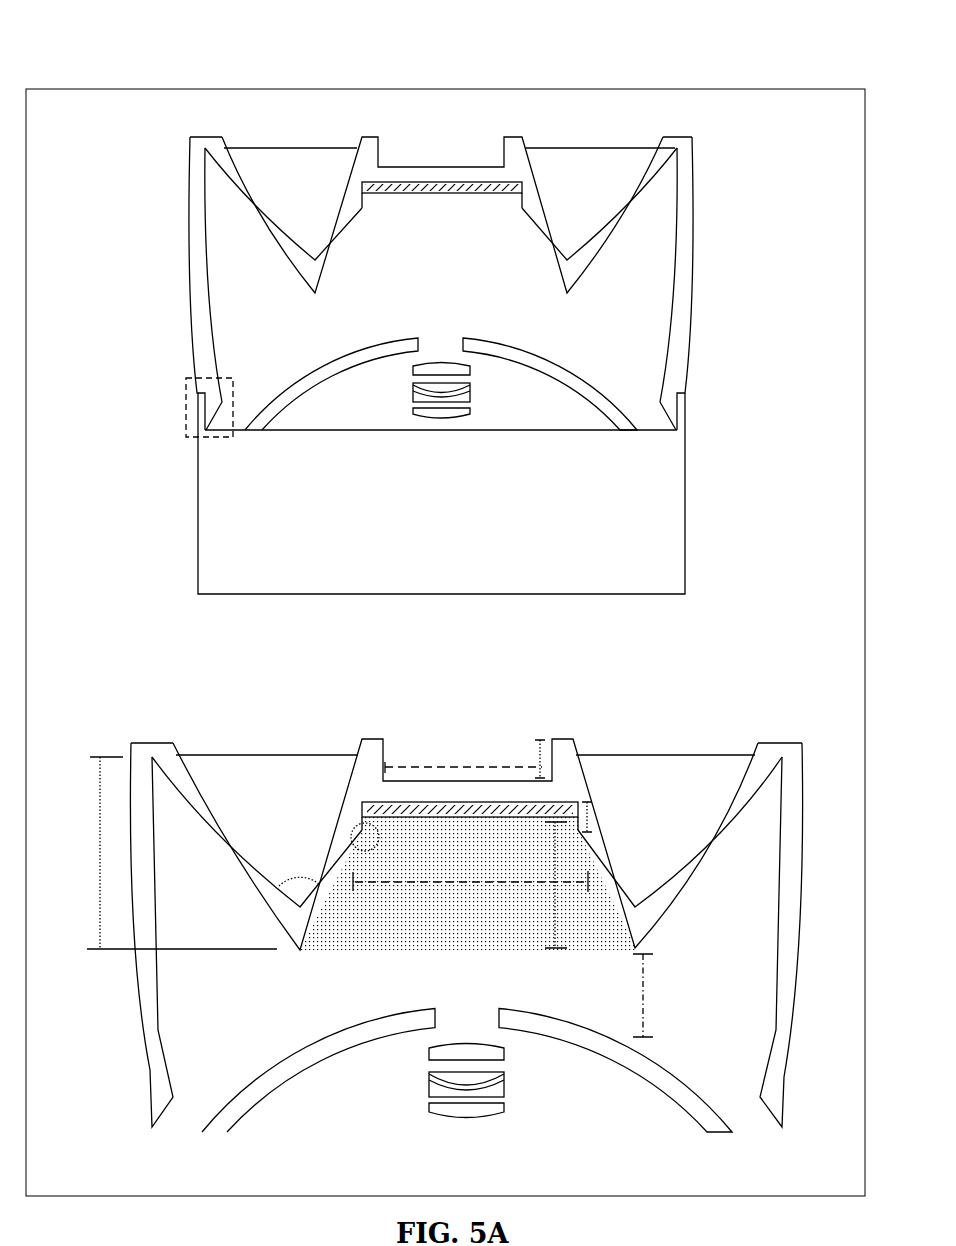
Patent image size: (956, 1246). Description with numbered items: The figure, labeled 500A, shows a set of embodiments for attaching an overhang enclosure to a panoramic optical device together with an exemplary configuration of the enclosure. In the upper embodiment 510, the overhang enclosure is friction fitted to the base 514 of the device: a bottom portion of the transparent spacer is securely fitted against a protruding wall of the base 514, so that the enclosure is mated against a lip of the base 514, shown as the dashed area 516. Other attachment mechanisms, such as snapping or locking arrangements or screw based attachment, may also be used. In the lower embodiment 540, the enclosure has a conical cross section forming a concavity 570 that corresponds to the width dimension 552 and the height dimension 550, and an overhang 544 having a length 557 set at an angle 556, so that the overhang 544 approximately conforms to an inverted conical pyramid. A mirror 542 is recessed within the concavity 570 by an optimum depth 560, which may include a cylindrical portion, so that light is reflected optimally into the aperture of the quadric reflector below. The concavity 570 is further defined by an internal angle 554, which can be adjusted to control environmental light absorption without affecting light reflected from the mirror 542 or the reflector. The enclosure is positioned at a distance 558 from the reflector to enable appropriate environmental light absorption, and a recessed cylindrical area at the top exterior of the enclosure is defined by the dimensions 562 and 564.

The head-mounted display system drawing 500A is at (445, 619).
The embodiment 510 is at (363, 345).
The embodiment 540 is at (418, 896).
The base 514 is at (197, 518).
The area 516 is at (187, 397).
The mirror 542 is at (467, 816).
The overhang 544 is at (215, 813).
The dimension 550 is at (557, 938).
The cavity width 552 is at (368, 886).
The internal angle 554 is at (380, 838).
The angle 556 is at (287, 870).
The length 557 is at (98, 893).
The distance 558 is at (645, 1002).
The depth 560 is at (590, 815).
The dimension 562 is at (538, 748).
The dimension 564 is at (404, 763).
The concavity 570 is at (468, 883).